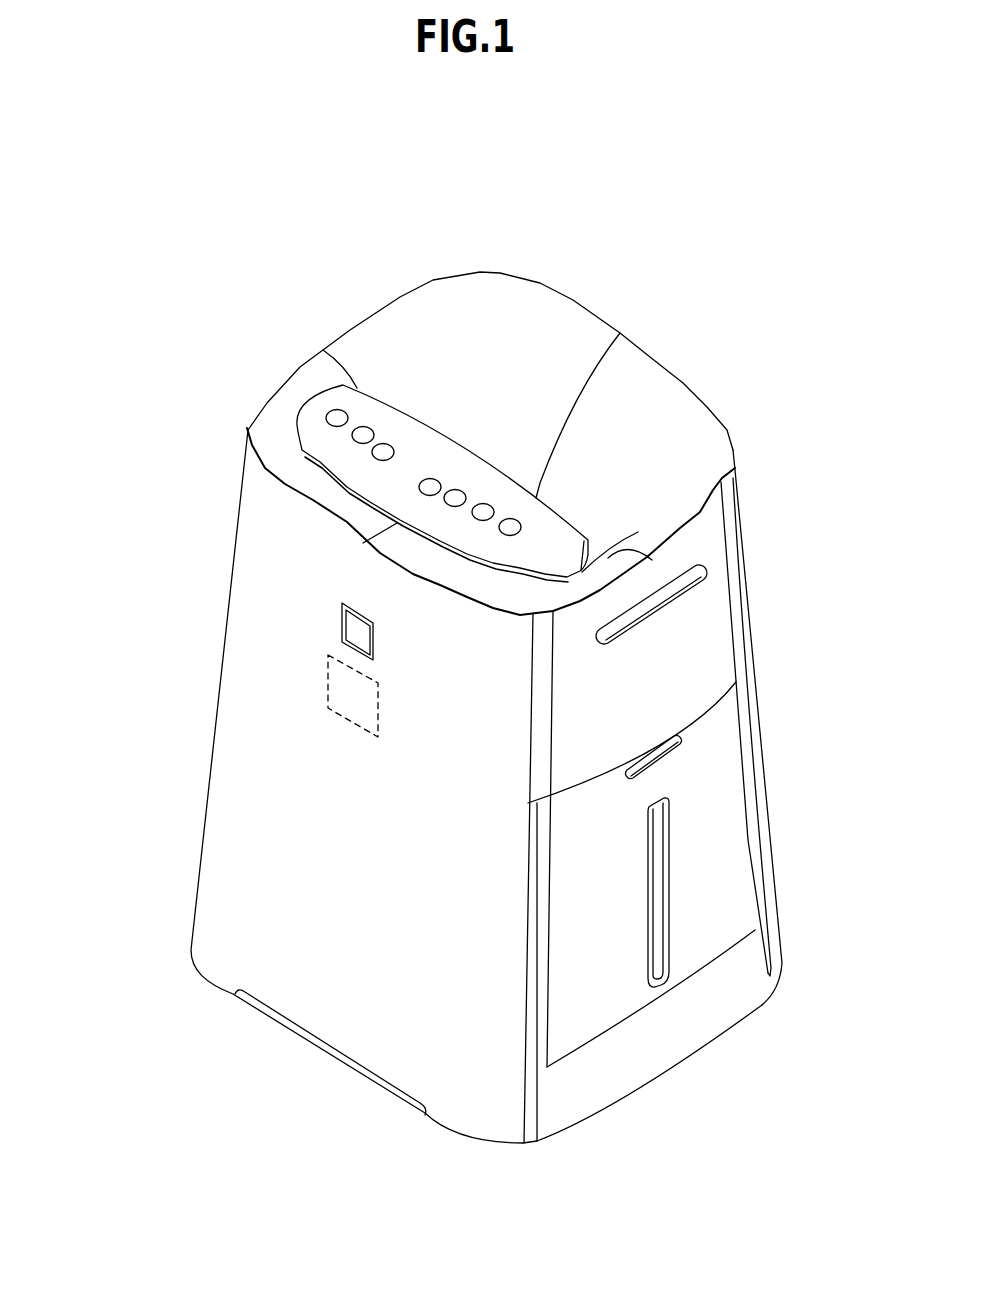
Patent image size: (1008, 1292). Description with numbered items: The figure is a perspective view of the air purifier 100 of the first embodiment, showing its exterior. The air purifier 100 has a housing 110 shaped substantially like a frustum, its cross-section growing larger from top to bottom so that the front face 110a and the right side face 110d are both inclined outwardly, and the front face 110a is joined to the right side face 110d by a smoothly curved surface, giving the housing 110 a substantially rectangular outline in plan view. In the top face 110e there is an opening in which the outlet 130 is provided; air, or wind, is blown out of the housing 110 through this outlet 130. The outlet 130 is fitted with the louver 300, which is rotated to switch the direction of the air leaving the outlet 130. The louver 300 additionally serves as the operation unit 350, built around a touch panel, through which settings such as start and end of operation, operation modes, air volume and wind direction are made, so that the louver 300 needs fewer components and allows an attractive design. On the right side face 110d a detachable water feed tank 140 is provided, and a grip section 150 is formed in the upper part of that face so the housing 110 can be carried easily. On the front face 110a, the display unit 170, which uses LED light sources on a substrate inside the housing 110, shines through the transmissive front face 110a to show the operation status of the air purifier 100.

The air purifier 100 is at (662, 280).
The housing 110 is at (224, 610).
The front face 110a is at (212, 797).
The right side face 110d is at (720, 667).
The top face 110e is at (482, 272).
The outlet 130 is at (429, 308).
The water feed tank 140 is at (728, 812).
The grip section 150 is at (707, 569).
The display unit 170 is at (327, 683).
The louver 300 is at (284, 414).
The operation unit 350 is at (354, 458).